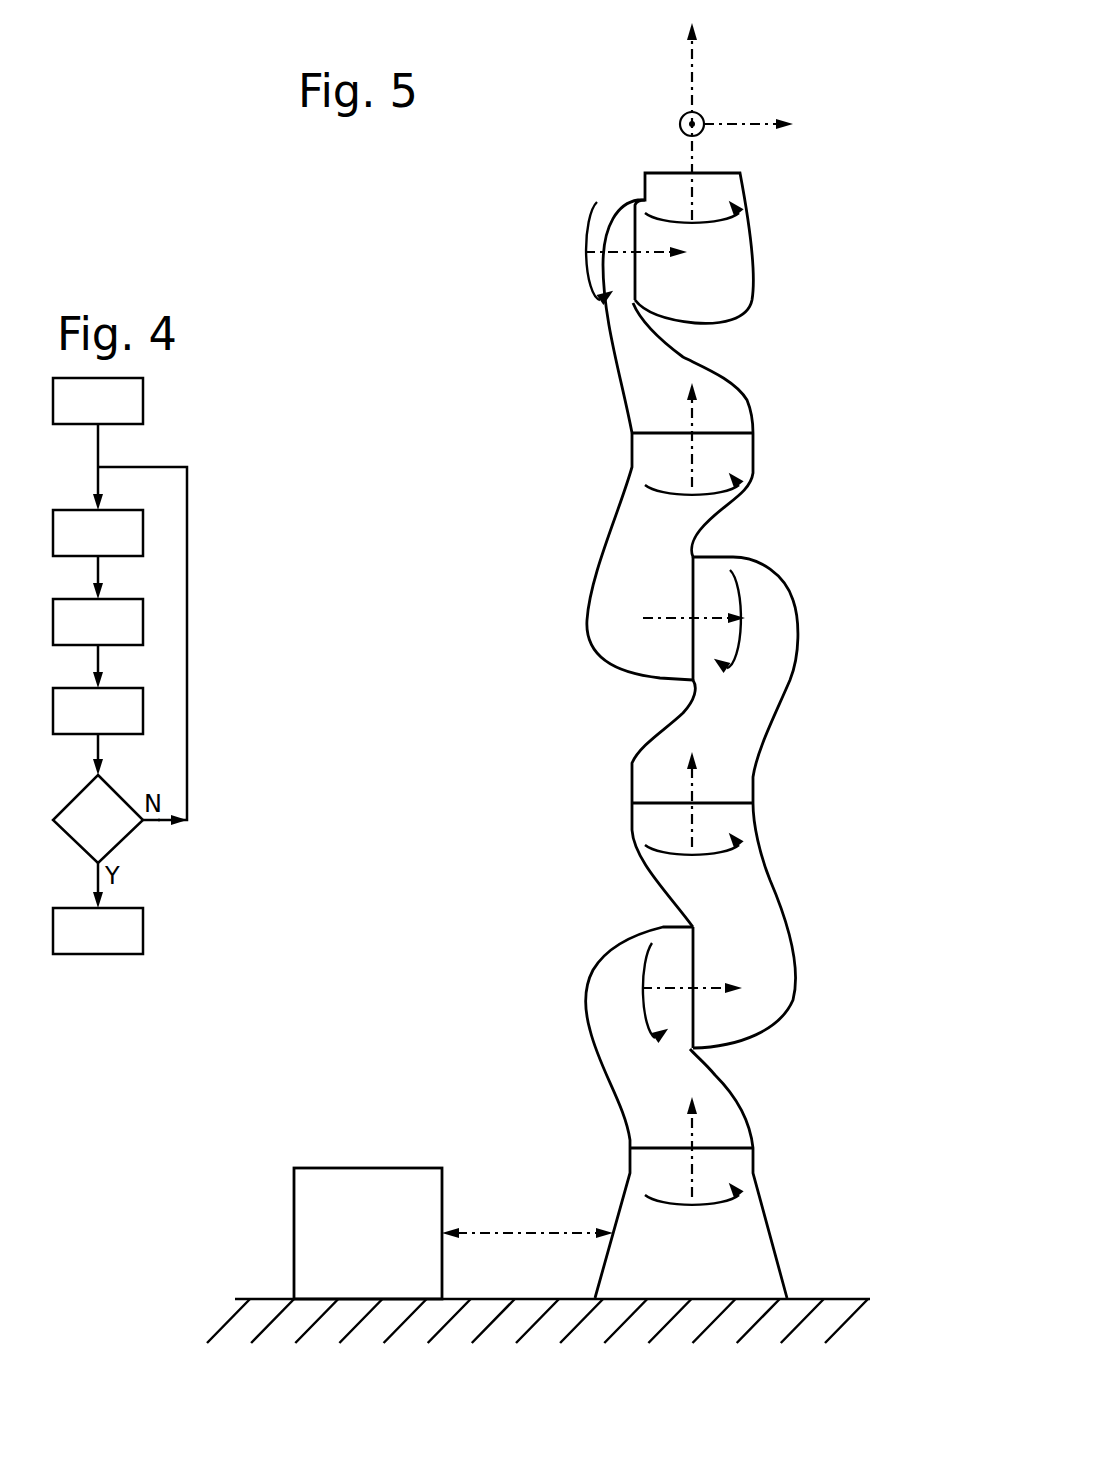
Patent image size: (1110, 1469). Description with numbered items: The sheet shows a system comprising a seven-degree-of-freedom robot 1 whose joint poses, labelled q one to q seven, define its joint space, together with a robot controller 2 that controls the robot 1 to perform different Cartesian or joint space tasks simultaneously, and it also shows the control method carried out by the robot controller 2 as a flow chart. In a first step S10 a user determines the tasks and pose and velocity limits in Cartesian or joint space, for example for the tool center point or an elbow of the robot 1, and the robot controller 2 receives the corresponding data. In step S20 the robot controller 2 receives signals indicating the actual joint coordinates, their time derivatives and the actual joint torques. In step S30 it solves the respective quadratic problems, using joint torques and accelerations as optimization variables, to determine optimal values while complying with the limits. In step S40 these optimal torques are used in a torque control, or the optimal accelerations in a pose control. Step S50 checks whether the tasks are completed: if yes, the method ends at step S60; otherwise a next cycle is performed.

In FIG. 5, the robot 1 is at (585, 618).
In FIG. 5, the robot controller 2 is at (368, 1233).
In FIG. 4, the first step S10 is at (98, 401).
In FIG. 4, the step S20 is at (98, 533).
In FIG. 4, the step S30 is at (98, 622).
In FIG. 4, the step S40 is at (98, 711).
In FIG. 4, the step S50 is at (98, 819).
In FIG. 4, the step S60 is at (98, 931).